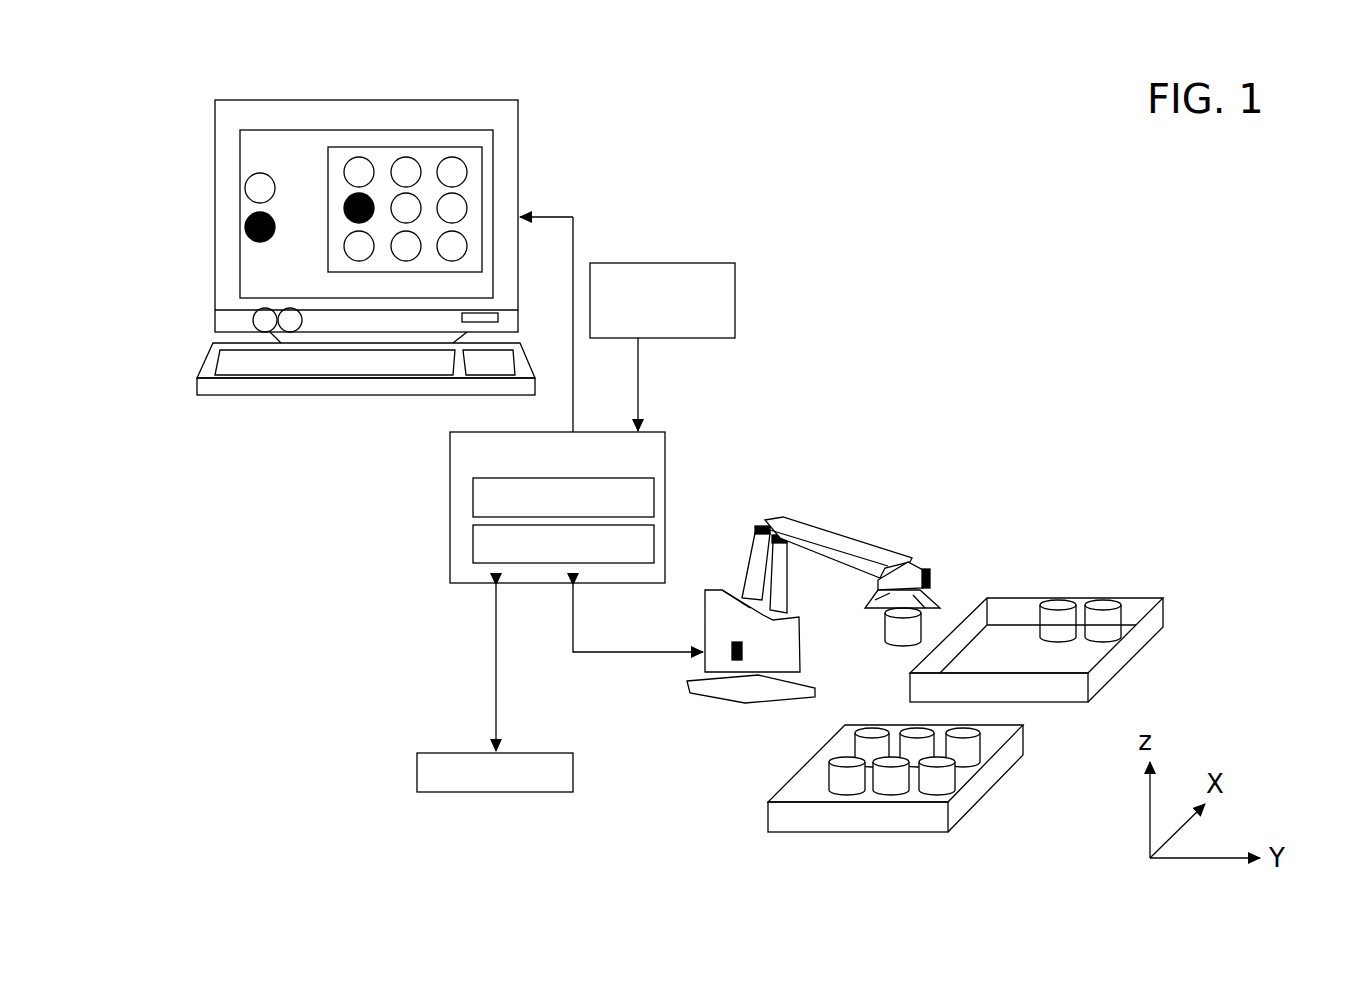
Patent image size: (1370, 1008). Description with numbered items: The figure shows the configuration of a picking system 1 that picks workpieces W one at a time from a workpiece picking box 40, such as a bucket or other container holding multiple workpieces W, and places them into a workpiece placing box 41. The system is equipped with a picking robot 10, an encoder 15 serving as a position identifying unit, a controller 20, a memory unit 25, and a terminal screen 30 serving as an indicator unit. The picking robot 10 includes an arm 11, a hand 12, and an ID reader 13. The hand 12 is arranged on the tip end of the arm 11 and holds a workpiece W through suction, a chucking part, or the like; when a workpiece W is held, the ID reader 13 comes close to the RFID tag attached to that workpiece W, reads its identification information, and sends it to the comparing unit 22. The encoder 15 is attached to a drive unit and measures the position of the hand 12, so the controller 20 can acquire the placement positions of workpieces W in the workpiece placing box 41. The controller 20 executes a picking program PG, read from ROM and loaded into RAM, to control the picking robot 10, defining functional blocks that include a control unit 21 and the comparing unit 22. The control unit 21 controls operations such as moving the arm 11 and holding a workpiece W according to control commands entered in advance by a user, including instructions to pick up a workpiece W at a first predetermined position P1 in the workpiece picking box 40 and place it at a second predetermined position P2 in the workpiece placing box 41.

The picking system 1 is at (1003, 371).
The picking robot 10 is at (815, 547).
The arm 11 is at (783, 522).
The hand 12 is at (940, 546).
The ID reader 13 is at (927, 571).
The encoder 15 is at (730, 652).
The controller 20 is at (549, 507).
The control unit 21 is at (473, 498).
The comparing unit 22 is at (473, 545).
The memory unit 25 is at (417, 777).
The terminal screen 30 is at (510, 118).
The workpiece picking box 40 is at (1017, 742).
The workpiece placing box 41 is at (1158, 620).
The workpiece W is at (898, 635).
The picking program PG is at (720, 302).
The first predetermined position P1 is at (821, 777).
The second predetermined position P2 is at (1079, 657).